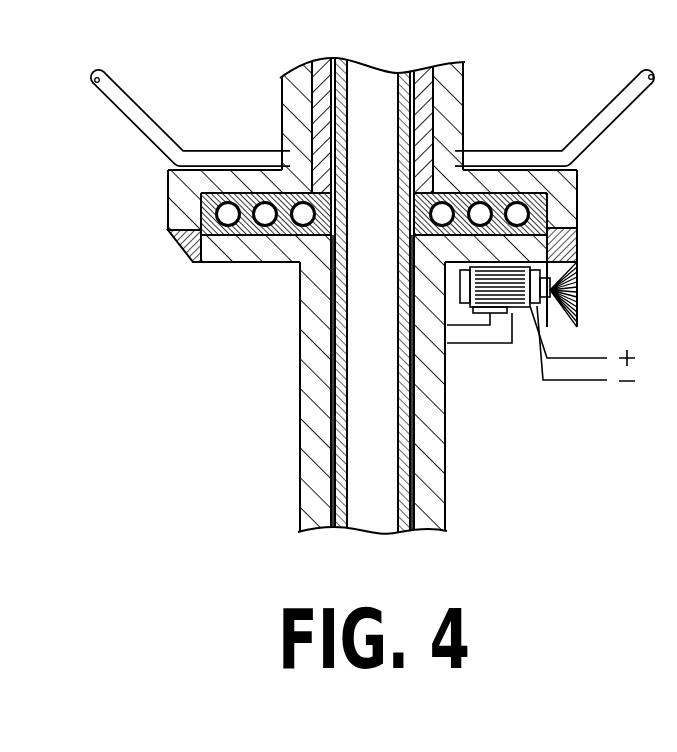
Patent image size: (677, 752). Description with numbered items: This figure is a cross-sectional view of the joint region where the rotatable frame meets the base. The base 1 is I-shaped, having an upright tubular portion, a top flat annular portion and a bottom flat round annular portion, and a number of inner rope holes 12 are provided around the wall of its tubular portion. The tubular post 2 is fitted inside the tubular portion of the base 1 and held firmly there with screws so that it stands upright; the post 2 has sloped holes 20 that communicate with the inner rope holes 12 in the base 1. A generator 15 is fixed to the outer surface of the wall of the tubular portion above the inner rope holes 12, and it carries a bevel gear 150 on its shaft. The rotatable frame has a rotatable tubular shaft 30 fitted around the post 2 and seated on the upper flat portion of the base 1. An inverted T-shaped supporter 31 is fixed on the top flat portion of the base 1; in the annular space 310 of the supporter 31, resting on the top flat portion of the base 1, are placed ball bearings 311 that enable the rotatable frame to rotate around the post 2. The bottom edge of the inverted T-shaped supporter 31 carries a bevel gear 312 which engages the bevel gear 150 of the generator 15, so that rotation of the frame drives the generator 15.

The base 1 is at (313, 490).
The tubular post 2 is at (407, 482).
The inner rope holes 12 is at (313, 408).
The generator 15 is at (502, 313).
The sloped holes 20 is at (405, 391).
The rotatable tubular shaft 30 is at (320, 62).
The inverted T-shaped supporter 31 is at (293, 85).
The annular space 310 is at (244, 192).
The ball bearings 311 is at (220, 237).
The bevel gear 312 is at (573, 237).
The bevel gear 150 is at (577, 275).